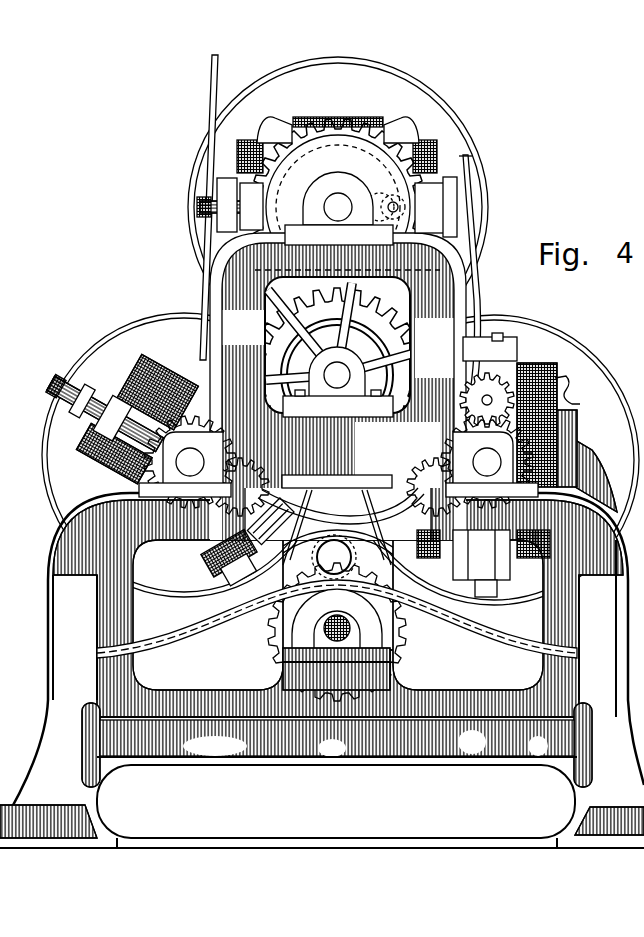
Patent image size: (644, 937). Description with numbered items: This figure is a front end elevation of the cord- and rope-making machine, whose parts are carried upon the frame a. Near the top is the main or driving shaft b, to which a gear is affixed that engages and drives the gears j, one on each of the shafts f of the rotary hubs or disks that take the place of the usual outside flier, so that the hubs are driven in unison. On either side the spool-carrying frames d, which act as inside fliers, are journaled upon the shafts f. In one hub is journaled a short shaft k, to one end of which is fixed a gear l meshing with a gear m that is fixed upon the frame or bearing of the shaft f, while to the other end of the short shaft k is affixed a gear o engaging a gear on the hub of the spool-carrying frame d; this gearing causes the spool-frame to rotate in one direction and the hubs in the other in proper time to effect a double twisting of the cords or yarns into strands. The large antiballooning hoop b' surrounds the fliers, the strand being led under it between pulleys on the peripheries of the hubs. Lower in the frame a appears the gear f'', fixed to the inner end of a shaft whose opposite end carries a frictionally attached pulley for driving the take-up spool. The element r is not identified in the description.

The frame a is at (322, 540).
The main or driving shaft b is at (338, 382).
The antiballooning hoop b' is at (340, 330).
The spool-carrying frame d is at (198, 206).
The shaft f is at (338, 334).
The gear f'' is at (337, 602).
The gear j is at (338, 207).
The short shaft k is at (337, 372).
The gear l is at (558, 382).
The gear m is at (210, 437).
The gear o is at (513, 372).
The field block r is at (243, 158).